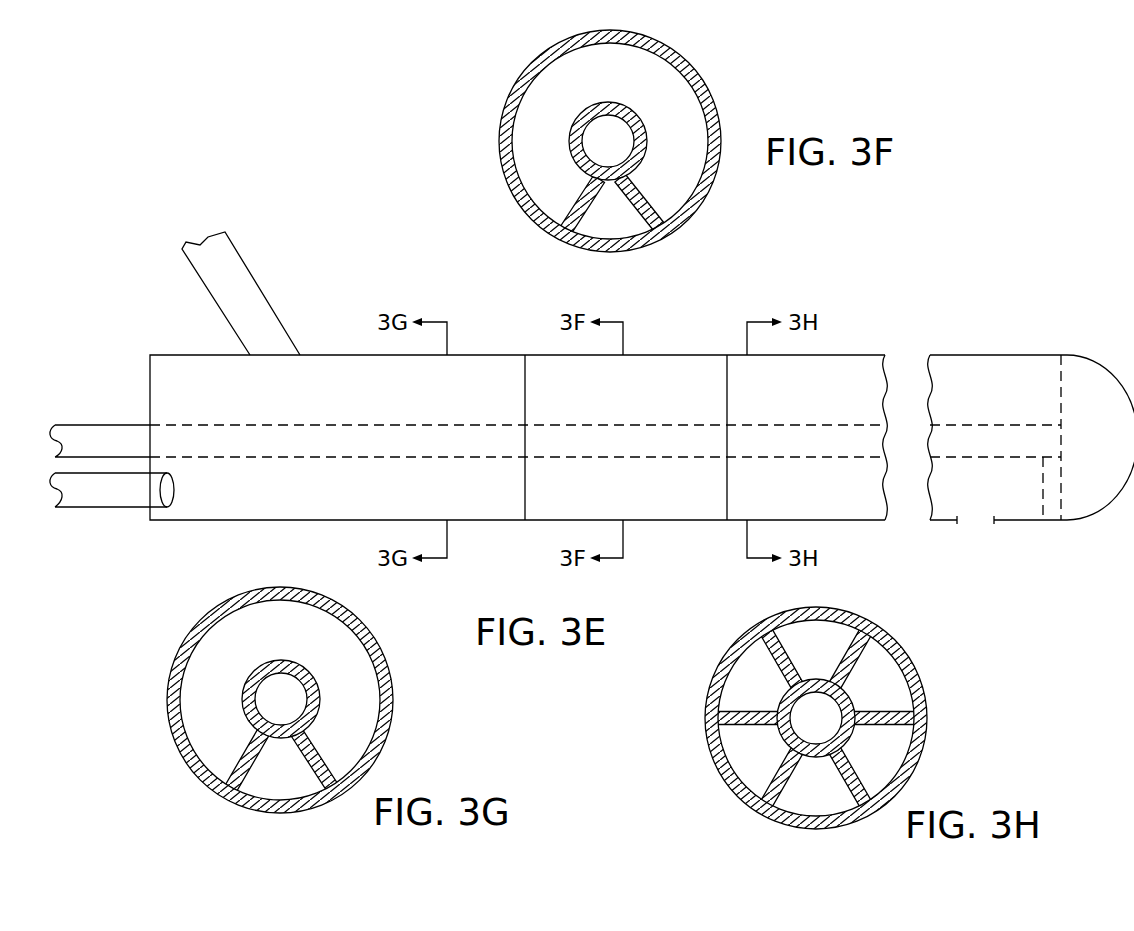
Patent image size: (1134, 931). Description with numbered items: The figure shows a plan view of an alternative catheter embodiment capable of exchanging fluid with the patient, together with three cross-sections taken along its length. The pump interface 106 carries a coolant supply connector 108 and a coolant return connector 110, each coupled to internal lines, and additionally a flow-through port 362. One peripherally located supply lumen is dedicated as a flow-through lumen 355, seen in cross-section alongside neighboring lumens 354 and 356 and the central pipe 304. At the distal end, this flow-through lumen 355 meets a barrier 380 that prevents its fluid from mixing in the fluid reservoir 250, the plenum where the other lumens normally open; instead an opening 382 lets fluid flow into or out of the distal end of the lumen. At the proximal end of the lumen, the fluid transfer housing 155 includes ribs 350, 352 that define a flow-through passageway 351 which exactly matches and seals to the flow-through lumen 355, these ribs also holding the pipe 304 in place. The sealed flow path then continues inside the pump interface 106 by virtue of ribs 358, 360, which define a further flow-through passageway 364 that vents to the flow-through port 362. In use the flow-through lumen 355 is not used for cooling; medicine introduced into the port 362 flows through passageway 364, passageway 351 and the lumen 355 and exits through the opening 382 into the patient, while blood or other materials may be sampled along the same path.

In FIG. 3E, the pump interface 106 is at (110, 322).
In FIG. 3E, the coolant supply connector 108 is at (247, 256).
In FIG. 3E, the coolant return connector 110 is at (100, 423).
In FIG. 3E, the flow-through port 362 is at (103, 509).
In FIG. 3E, the fluid transfer housing 155 is at (665, 355).
In FIG. 3E, the fluid reservoir 250 is at (1093, 418).
In FIG. 3E, the barrier 380 is at (1060, 490).
In FIG. 3E, the opening 382 is at (972, 538).
In FIG. 3F, the pipe 304 is at (637, 120).
In FIG. 3F, the rib 350 is at (567, 220).
In FIG. 3F, the rib 352 is at (653, 218).
In FIG. 3F, the flow-through passageway 351 is at (600, 215).
In FIG. 3G, the rib 358 is at (245, 795).
In FIG. 3G, the rib 360 is at (313, 793).
In FIG. 3G, the flow-through passageway 364 is at (277, 765).
In FIG. 3H, the first channel 354 is at (780, 820).
In FIG. 3H, the flow-through lumen 355 is at (815, 787).
In FIG. 3H, the third channel 356 is at (850, 797).